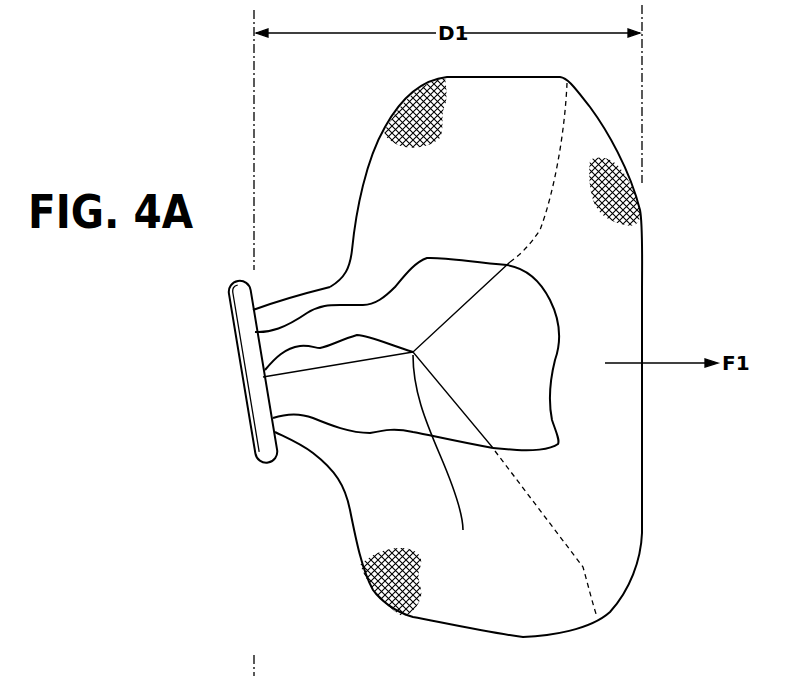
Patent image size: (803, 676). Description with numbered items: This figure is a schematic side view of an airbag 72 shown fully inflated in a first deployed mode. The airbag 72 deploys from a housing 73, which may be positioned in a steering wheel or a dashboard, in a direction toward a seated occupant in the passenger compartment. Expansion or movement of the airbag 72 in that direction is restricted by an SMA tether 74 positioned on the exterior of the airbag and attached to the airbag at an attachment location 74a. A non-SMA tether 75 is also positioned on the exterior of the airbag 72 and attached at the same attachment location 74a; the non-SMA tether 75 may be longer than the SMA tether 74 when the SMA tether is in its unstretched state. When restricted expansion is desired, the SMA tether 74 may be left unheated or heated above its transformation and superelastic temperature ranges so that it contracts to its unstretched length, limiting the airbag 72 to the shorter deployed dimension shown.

The airbag 72 is at (541, 66).
The housing 73 is at (237, 373).
The SMA tether 74 is at (323, 362).
The attachment location 74a is at (448, 456).
The non-SMA tether 75 is at (323, 347).